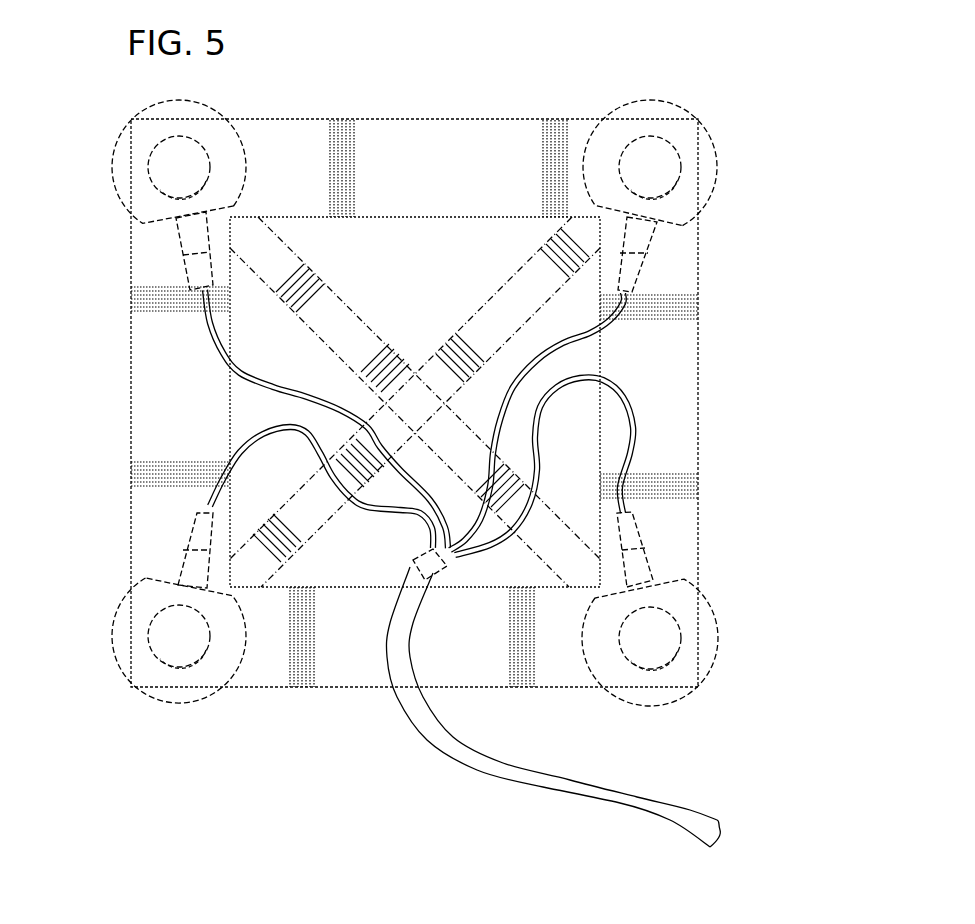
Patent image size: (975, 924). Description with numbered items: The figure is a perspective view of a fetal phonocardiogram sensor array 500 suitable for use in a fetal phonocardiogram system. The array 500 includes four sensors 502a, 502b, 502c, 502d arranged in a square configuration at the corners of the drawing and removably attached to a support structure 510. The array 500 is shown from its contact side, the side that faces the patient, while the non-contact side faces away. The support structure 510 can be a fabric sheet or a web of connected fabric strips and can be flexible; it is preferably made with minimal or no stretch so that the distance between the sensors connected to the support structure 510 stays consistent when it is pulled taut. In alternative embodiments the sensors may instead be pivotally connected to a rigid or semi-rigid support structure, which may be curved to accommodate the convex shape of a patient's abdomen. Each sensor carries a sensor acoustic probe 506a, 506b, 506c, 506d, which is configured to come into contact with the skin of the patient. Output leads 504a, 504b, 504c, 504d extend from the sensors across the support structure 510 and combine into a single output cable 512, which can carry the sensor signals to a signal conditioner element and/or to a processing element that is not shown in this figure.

The fetal phonocardiogram sensor array 500 is at (677, 80).
The sensor 502a is at (709, 171).
The sensor 502b is at (122, 171).
The sensor 502c is at (120, 648).
The sensor 502d is at (708, 648).
The output lead 504a is at (597, 333).
The output lead 504b is at (200, 339).
The output lead 504c is at (252, 443).
The output lead 504d is at (637, 433).
The sensor acoustic probe 506a is at (670, 160).
The sensor acoustic probe 506b is at (148, 158).
The sensor acoustic probe 506c is at (160, 630).
The sensor acoustic probe 506d is at (670, 632).
The support structure 510 is at (444, 171).
The output cable 512 is at (460, 760).